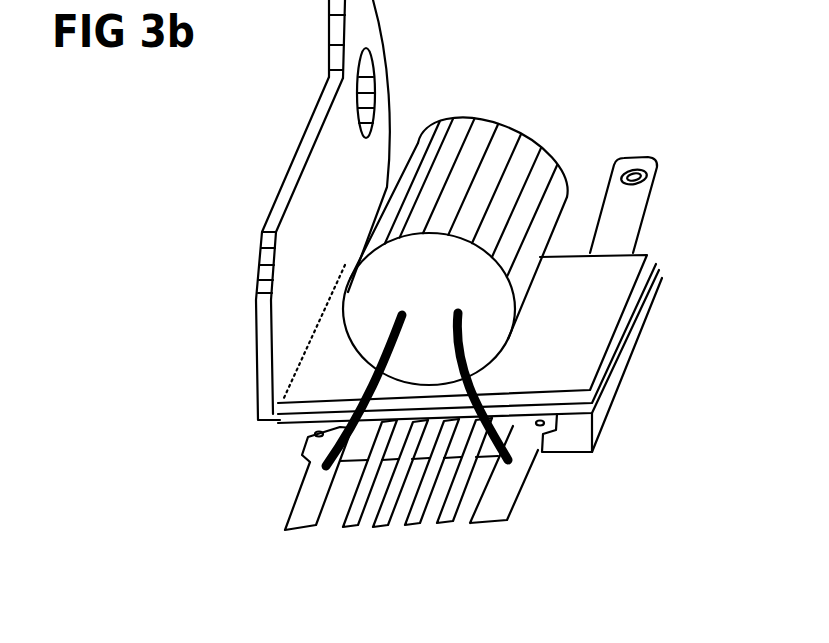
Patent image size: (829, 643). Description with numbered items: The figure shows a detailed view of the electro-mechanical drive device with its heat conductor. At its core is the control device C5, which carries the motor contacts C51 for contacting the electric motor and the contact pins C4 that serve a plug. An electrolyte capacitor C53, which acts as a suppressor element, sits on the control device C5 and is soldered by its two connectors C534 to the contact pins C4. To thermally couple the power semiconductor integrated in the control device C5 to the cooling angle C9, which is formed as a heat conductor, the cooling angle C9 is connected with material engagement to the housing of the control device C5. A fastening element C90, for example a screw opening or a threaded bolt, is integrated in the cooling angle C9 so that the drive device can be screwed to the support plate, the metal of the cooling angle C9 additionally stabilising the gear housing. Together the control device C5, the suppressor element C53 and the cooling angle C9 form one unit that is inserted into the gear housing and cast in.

The cooling angle C9 is at (293, 298).
The fastening element C90 is at (356, 62).
The electrolyte capacitor C53 is at (487, 187).
The motor contacts C51 is at (628, 212).
The control device C5 is at (608, 395).
The contact pins C4 is at (503, 490).
The connectors C534 is at (330, 405).